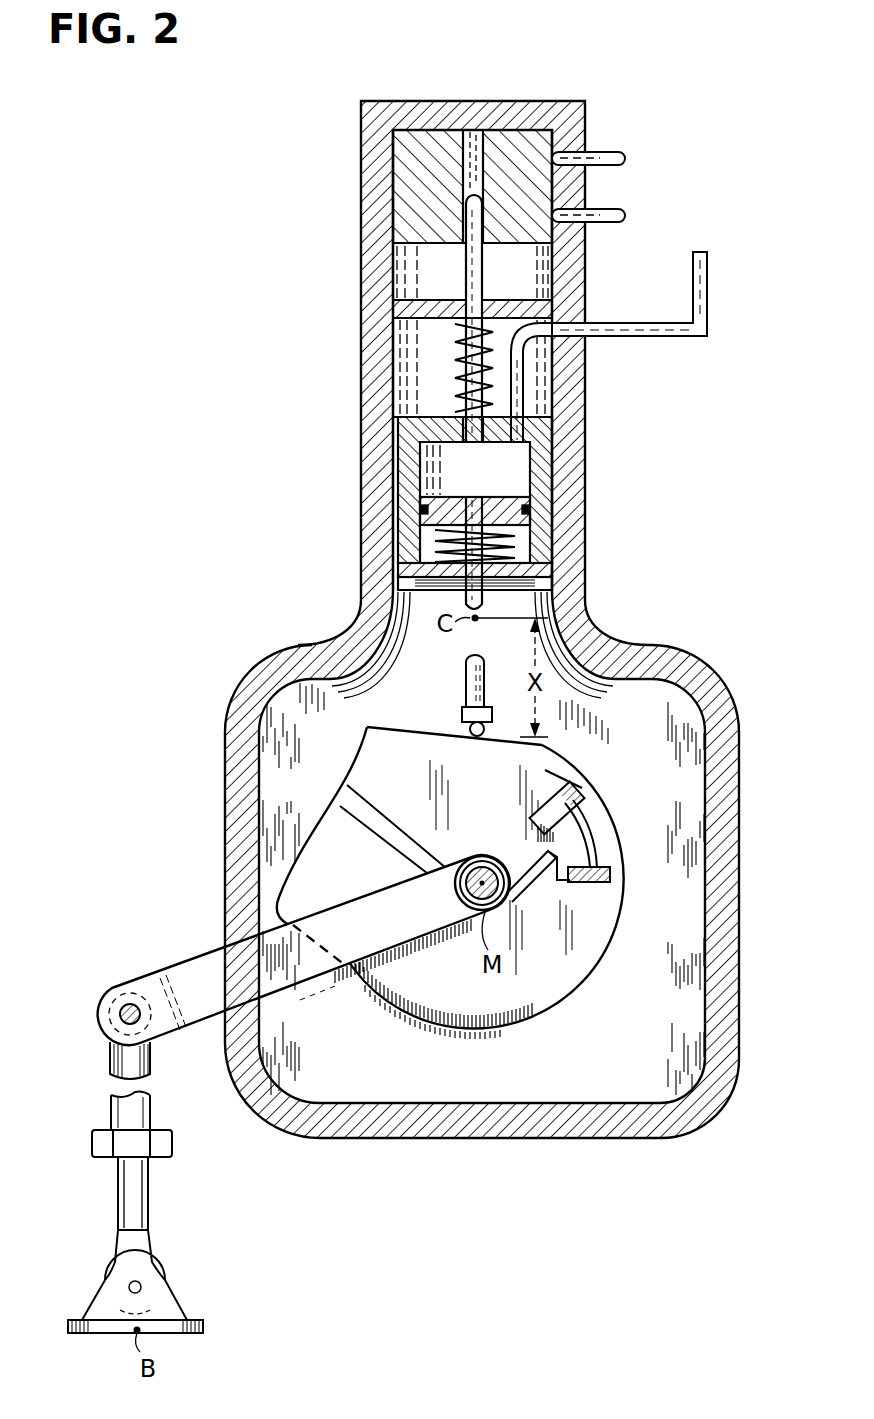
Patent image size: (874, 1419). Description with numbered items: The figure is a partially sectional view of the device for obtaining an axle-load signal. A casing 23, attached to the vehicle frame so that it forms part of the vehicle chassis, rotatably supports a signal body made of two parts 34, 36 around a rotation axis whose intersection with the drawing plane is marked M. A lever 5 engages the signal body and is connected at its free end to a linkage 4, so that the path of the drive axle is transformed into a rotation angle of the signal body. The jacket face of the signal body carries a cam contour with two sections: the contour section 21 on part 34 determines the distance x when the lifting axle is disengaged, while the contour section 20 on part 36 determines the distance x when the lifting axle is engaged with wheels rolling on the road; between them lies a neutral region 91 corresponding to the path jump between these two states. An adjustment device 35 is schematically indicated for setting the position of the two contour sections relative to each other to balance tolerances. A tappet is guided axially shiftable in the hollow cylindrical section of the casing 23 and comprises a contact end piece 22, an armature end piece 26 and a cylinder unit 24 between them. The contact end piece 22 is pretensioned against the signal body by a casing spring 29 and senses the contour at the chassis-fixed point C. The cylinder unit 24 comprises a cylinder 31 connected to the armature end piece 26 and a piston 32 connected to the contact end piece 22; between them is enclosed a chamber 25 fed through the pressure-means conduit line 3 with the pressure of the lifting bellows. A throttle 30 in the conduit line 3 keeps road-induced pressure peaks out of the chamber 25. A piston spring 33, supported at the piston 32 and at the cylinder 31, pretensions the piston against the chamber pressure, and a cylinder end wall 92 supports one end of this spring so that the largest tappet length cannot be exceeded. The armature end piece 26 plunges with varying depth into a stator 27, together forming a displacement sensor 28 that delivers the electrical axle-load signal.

The pressure-means conduit line 3 is at (705, 312).
The linkage 4 is at (112, 1060).
The lever 5 is at (192, 970).
The contour section 20 is at (330, 836).
The contour section 21 is at (441, 734).
The contact end piece 22 is at (476, 686).
The casing 23 is at (378, 548).
The cylinder unit 24 is at (393, 527).
The chamber 25 is at (441, 456).
The armature end piece 26 is at (466, 282).
The stator 27 is at (395, 160).
The displacement sensor 28 is at (630, 138).
The casing spring 29 is at (458, 372).
The throttle 30 is at (565, 344).
The cylinder 31 is at (552, 456).
The piston 32 is at (498, 510).
The piston spring 33 is at (522, 540).
The signal body part 34 is at (548, 764).
The adjustment device 35 is at (628, 858).
The signal body part 36 is at (563, 975).
The neutral region 91 is at (365, 738).
The cylinder end wall 92 is at (578, 592).